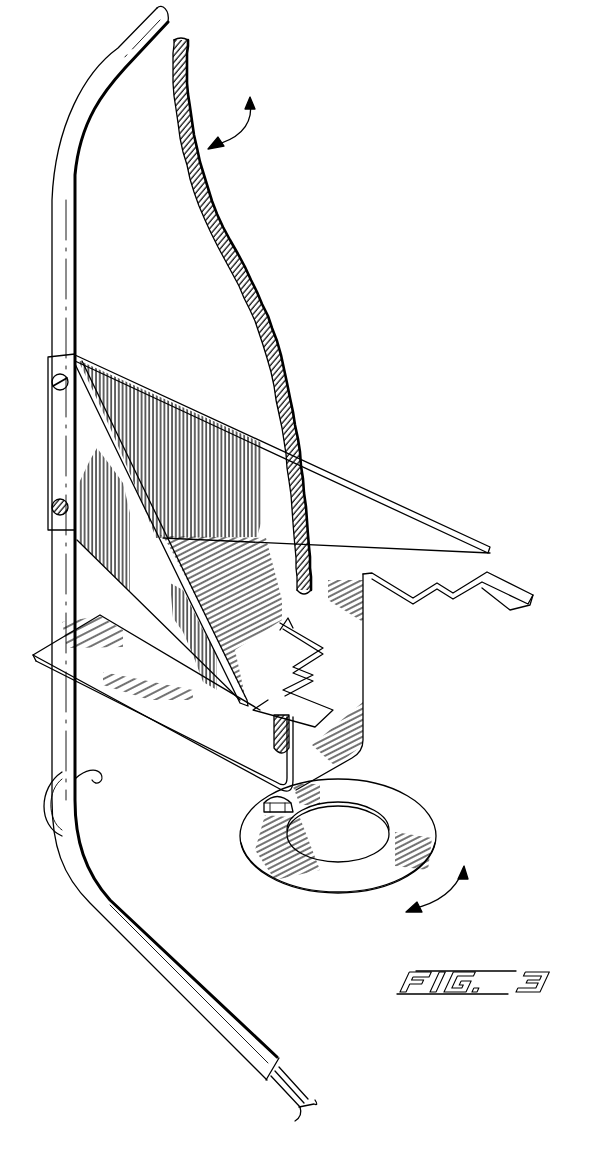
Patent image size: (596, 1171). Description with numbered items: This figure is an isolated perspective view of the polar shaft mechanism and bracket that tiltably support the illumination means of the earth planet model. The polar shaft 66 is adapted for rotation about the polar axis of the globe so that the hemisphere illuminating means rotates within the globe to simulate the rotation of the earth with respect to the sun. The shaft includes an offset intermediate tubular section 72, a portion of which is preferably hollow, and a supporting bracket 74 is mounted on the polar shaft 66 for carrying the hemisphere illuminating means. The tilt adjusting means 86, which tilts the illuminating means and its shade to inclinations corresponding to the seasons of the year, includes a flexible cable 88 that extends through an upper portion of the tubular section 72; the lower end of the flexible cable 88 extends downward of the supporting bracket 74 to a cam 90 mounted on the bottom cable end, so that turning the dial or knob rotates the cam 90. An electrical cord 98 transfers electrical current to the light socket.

The polar shaft 66 is at (85, 319).
The offset intermediate tubular section 72 is at (70, 727).
The supporting bracket 74 is at (379, 491).
The tilt adjusting means 86 is at (362, 800).
The flexible cable 88 is at (288, 348).
The cam 90 is at (430, 823).
The electrical cord 98 is at (95, 786).